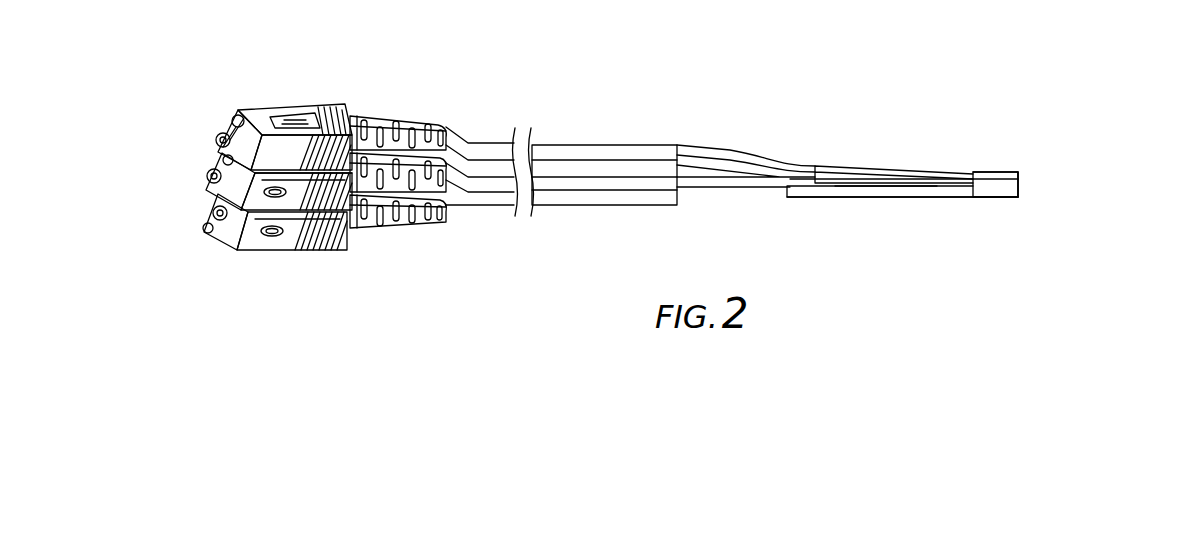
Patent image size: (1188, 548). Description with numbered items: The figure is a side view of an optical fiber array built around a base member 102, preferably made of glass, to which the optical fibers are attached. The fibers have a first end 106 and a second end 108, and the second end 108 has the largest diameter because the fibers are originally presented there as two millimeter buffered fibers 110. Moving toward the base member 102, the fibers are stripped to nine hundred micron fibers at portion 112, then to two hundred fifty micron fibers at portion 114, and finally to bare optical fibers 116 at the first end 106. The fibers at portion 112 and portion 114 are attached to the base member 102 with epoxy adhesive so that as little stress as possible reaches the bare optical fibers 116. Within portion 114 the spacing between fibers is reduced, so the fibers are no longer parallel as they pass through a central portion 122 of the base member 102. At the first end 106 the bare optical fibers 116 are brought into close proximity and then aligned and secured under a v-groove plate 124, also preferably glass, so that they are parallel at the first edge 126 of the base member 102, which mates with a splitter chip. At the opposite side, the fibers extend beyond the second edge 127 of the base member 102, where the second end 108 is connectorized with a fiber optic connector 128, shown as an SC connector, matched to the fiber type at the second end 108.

The base member 102 is at (964, 199).
The first end 106 is at (1027, 162).
The second end 108 is at (369, 158).
The buffered fibers 110 is at (610, 143).
The portion 112 is at (745, 156).
The portion 114 is at (860, 169).
The bare optical fibers 116 is at (945, 170).
The central portion 122 is at (937, 199).
The v-groove plate 124 is at (1000, 172).
The first edge 126 is at (1022, 185).
The second edge 127 is at (786, 197).
The fiber optic connector 128 is at (405, 219).